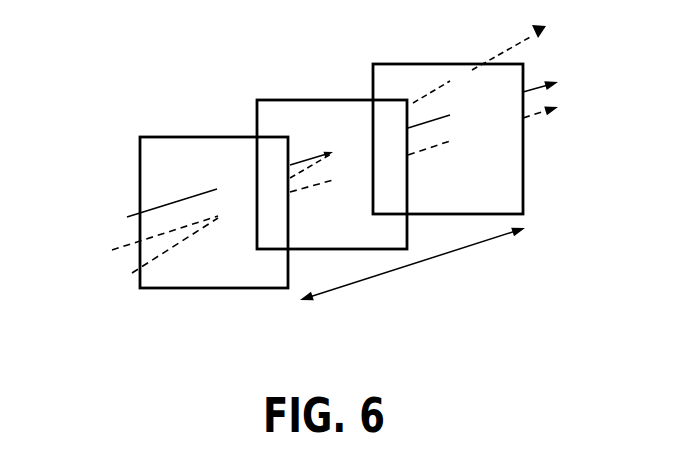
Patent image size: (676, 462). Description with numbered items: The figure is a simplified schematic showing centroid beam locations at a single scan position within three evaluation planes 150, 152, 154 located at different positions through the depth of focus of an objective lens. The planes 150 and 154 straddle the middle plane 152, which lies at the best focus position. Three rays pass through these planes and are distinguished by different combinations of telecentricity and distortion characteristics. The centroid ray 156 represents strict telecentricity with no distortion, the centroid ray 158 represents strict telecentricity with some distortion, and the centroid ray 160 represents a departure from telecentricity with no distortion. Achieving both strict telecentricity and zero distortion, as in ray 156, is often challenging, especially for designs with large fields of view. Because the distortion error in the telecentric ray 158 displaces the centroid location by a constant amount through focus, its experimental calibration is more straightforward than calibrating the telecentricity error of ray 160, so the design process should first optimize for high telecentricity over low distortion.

The plane 150 is at (140, 171).
The middle plane 152 is at (297, 100).
The plane 154 is at (524, 203).
The centroid ray 156 is at (549, 80).
The centroid ray 158 is at (533, 116).
The centroid ray 160 is at (508, 46).